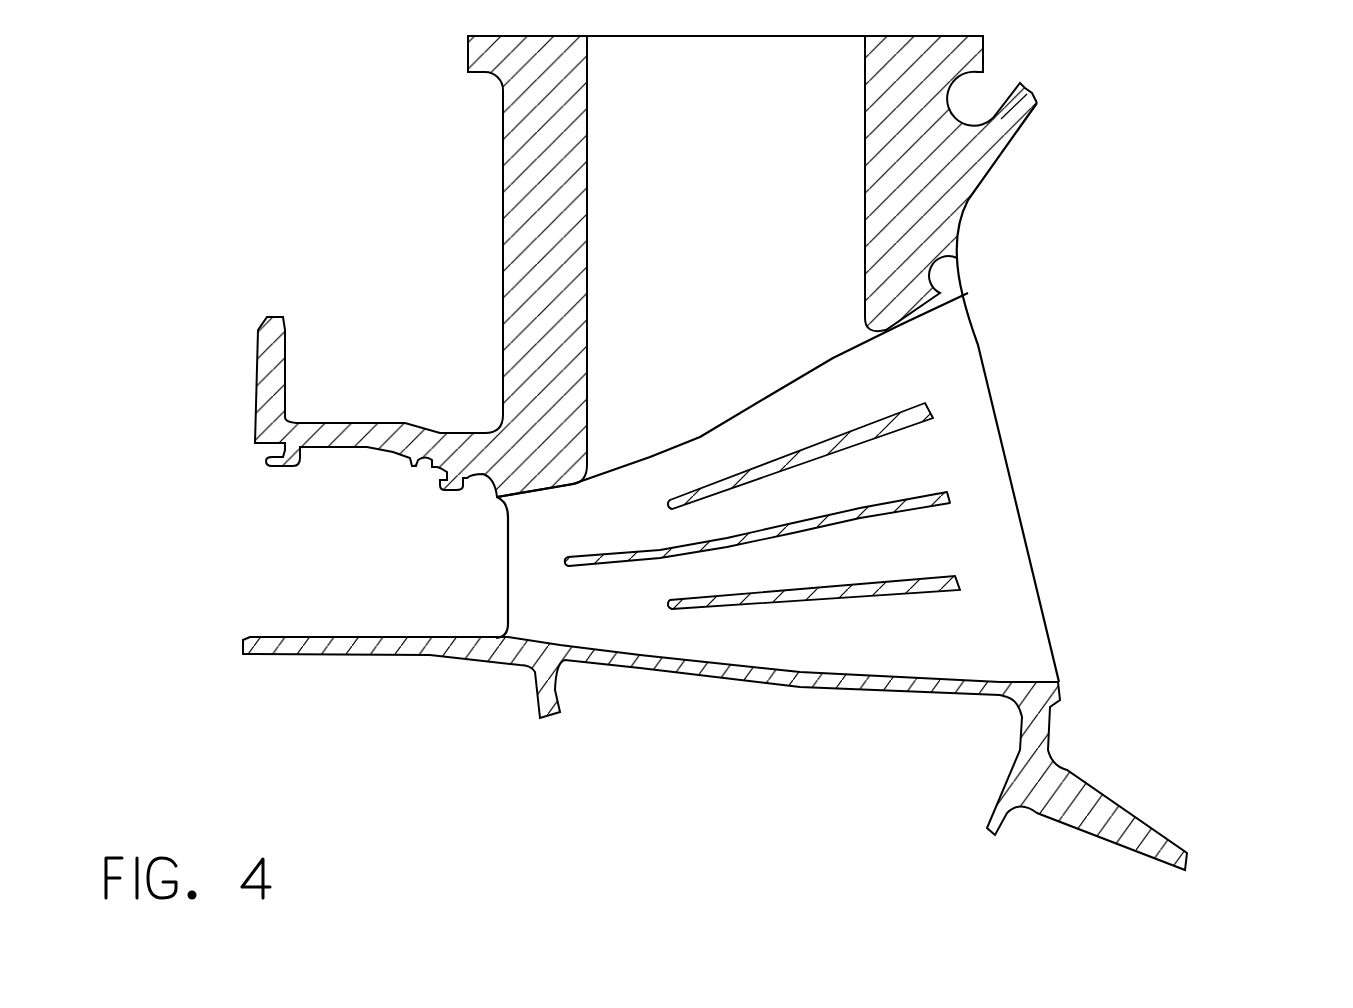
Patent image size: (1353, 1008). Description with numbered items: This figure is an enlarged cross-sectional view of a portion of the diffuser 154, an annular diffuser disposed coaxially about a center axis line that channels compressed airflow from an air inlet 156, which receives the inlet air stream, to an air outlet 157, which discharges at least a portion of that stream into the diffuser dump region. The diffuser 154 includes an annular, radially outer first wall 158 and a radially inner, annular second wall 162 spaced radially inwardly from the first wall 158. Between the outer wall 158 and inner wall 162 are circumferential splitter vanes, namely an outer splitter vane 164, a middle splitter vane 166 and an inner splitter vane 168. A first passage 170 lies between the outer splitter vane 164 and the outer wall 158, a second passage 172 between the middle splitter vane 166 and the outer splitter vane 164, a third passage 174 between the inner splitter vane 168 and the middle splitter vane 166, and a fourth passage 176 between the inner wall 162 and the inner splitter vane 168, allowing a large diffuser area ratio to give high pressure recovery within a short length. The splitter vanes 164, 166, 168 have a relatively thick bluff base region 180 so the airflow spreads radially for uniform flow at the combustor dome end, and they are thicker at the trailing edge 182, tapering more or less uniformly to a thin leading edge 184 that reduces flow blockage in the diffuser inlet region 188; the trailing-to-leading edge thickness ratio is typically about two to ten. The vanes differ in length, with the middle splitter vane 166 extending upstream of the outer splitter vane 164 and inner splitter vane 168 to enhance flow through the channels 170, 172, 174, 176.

The diffuser 154 is at (680, 755).
The air inlet 156 is at (327, 546).
The air outlet 157 is at (1193, 553).
The first wall 158 is at (955, 297).
The second wall 162 is at (1037, 738).
The outer splitter vane 164 is at (917, 405).
The middle splitter vane 166 is at (947, 492).
The inner splitter vane 168 is at (955, 576).
The first passage 170 is at (840, 425).
The second passage 172 is at (860, 492).
The third passage 174 is at (893, 562).
The fourth passage 176 is at (925, 653).
The bluff base region 180 is at (932, 412).
The trailing edge 182 is at (938, 382).
The leading edge 184 is at (628, 498).
The diffuser inlet region 188 is at (565, 601).